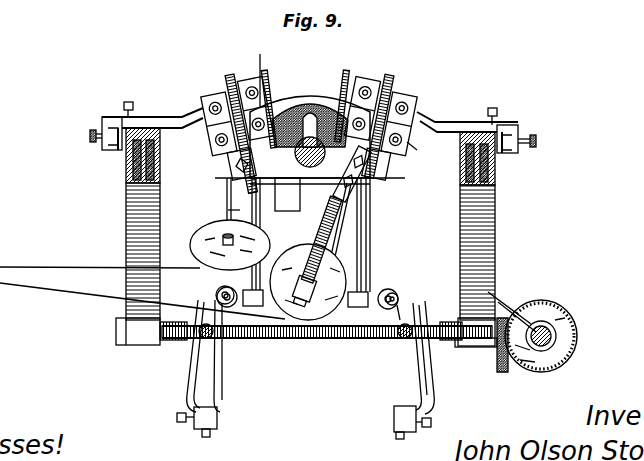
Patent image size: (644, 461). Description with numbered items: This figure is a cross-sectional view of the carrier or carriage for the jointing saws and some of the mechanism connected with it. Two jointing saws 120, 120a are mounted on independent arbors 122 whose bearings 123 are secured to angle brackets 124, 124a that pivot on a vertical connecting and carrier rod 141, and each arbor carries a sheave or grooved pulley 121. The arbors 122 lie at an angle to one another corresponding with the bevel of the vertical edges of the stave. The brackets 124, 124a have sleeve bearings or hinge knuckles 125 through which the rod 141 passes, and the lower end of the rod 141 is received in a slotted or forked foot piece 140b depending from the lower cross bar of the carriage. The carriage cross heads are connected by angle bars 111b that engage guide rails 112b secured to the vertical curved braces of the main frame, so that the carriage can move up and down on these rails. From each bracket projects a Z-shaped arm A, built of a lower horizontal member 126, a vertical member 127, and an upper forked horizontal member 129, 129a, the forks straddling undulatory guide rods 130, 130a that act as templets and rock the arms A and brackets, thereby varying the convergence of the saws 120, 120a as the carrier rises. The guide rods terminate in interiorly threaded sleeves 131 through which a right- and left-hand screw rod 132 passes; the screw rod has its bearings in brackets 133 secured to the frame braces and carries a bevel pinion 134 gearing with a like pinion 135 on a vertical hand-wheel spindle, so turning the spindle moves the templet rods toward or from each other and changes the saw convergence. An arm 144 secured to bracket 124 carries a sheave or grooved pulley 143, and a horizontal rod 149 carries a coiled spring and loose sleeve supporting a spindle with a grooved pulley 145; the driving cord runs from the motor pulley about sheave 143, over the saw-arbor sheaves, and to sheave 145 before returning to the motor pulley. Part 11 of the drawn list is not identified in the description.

The standard 11 is at (128, 182).
The angle bars 111b is at (525, 165).
The guide rails 112b is at (520, 105).
The jointing saw 120 is at (272, 77).
The jointing saw 120a is at (345, 78).
The sheave or grooved pulley 121 is at (235, 80).
The arbor 122 is at (203, 117).
The bearing 123 is at (349, 100).
The angle bracket 124 is at (218, 155).
The angle bracket 124a is at (400, 165).
The sleeve bearing or hinge knuckle 125 is at (307, 178).
The lower horizontal member 126 is at (222, 291).
The vertical member 127 is at (378, 291).
The upper forked horizontal member 129 is at (197, 382).
The upper forked horizontal member 129a is at (413, 383).
The guide rod 130 is at (215, 335).
The guide rod 130a is at (400, 338).
The interiorly threaded sleeve 131 is at (180, 337).
The screw rod 132 is at (310, 338).
The bracket 133 is at (127, 235).
The bevel pinion 134 is at (507, 375).
The bevel pinion 135 is at (566, 333).
The forked foot piece 140b is at (275, 198).
The connecting rod 141 is at (316, 140).
The sheave or grooved pulley 143 is at (196, 243).
The arm 144 is at (228, 210).
The sheave or grooved pulley 145 is at (308, 282).
The horizontal rod 149 is at (377, 212).
The Z-shaped arm A is at (215, 417).